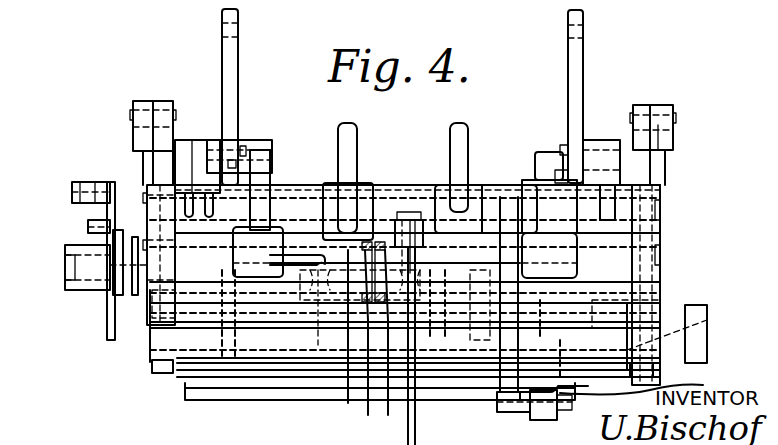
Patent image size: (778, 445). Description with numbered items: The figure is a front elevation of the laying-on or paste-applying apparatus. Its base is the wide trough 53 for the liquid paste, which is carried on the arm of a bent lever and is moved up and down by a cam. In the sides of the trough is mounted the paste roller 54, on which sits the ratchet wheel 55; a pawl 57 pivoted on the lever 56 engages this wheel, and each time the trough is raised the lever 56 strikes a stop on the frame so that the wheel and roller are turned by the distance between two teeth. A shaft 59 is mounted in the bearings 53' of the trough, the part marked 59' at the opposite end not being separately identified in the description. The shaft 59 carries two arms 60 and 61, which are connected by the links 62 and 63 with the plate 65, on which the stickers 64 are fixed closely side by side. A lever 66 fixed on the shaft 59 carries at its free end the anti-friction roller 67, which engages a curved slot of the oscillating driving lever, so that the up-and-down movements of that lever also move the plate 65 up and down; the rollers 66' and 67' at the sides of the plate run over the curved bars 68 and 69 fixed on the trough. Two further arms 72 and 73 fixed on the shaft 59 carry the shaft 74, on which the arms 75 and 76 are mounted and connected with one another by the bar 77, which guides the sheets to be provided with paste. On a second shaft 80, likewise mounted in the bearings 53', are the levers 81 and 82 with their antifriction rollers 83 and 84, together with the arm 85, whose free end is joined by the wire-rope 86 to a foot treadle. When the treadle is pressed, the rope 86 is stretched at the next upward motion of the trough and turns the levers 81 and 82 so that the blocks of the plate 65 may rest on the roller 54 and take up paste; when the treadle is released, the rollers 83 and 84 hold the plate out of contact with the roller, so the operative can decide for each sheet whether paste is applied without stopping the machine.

The trough 53 is at (361, 336).
The bearings 53' is at (665, 275).
The roller 54 is at (352, 250).
The ratchet wheel 55 is at (118, 305).
The lever 56 is at (108, 318).
The pawl 57 is at (123, 225).
The shaft 59 is at (417, 185).
The left side bracket 59' is at (143, 238).
The arm 60 is at (197, 175).
The arm 61 is at (610, 180).
The link 62 is at (233, 58).
The link 63 is at (575, 97).
The stickers 64 is at (270, 355).
The plate 65 is at (150, 370).
The lever 66 is at (534, 294).
The roller 66' is at (149, 312).
The anti-friction roller 67 is at (542, 415).
The roller 67' is at (649, 326).
The curved bar 68 is at (160, 107).
The curved bar 69 is at (652, 107).
The arm 72 is at (345, 130).
The arm 73 is at (462, 133).
The shaft 74 is at (258, 408).
The arm 75 is at (318, 340).
The arm 76 is at (482, 337).
The bar 77 is at (690, 388).
The shaft 80 is at (310, 255).
The lever 81 is at (260, 192).
The lever 82 is at (552, 192).
The antifriction roller 83 is at (234, 146).
The antifriction roller 84 is at (570, 148).
The arm 85 is at (397, 213).
The wire-rope 86 is at (408, 433).